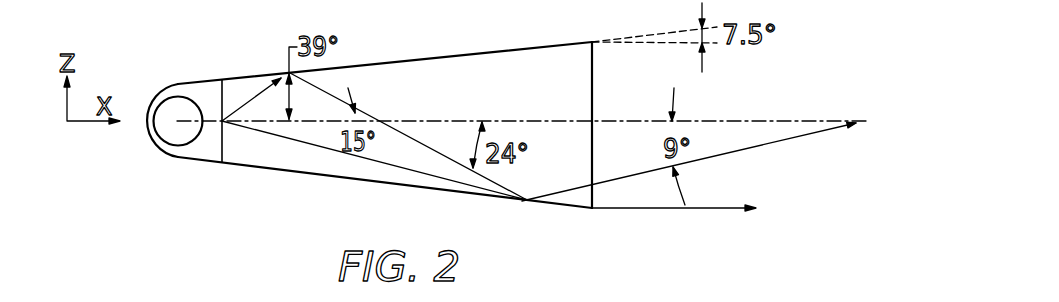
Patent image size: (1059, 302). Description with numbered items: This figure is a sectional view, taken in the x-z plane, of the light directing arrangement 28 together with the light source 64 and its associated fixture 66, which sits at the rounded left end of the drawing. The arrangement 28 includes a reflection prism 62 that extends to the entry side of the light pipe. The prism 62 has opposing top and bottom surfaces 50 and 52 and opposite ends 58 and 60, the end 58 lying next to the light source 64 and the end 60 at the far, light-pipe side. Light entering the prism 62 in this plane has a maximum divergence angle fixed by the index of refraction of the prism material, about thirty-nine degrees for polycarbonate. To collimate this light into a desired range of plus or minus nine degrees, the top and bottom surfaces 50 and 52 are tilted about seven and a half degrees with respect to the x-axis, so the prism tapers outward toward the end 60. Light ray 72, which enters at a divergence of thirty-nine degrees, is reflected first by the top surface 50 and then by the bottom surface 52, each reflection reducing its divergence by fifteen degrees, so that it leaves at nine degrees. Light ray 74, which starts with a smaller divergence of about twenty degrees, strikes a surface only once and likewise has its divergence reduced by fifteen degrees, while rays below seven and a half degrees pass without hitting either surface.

The light directing arrangement 28 is at (497, 208).
The top surface 50 is at (436, 55).
The bottom surface 52 is at (427, 189).
The end of prism 58 is at (222, 145).
The end of prism 60 is at (592, 62).
The reflection prism 62 is at (330, 80).
The light source 64 is at (172, 120).
The fixture 66 is at (200, 160).
The light ray 72 is at (253, 97).
The light ray 74 is at (405, 170).